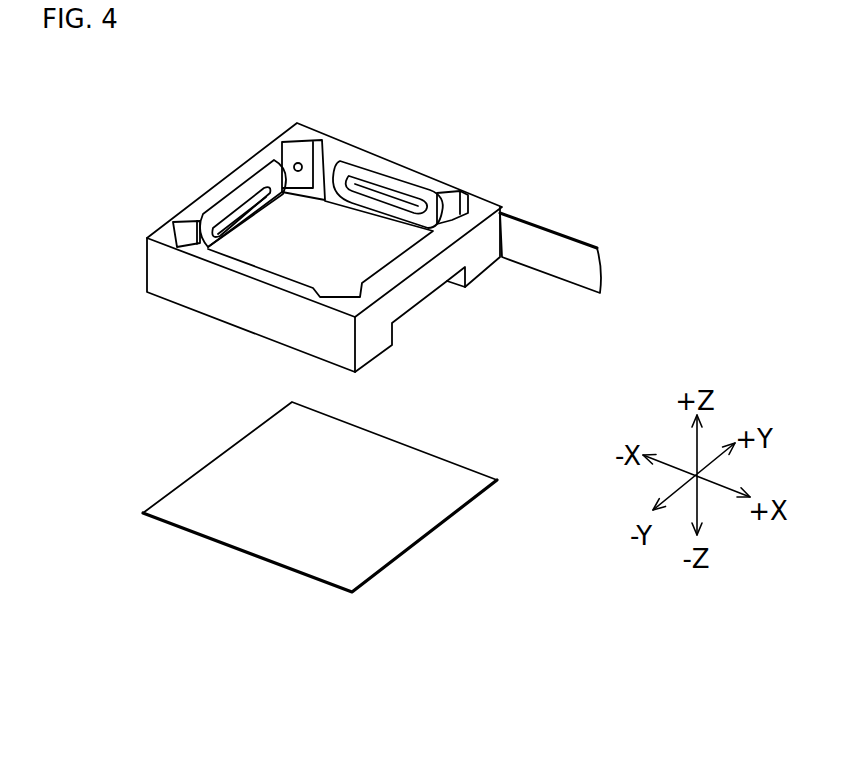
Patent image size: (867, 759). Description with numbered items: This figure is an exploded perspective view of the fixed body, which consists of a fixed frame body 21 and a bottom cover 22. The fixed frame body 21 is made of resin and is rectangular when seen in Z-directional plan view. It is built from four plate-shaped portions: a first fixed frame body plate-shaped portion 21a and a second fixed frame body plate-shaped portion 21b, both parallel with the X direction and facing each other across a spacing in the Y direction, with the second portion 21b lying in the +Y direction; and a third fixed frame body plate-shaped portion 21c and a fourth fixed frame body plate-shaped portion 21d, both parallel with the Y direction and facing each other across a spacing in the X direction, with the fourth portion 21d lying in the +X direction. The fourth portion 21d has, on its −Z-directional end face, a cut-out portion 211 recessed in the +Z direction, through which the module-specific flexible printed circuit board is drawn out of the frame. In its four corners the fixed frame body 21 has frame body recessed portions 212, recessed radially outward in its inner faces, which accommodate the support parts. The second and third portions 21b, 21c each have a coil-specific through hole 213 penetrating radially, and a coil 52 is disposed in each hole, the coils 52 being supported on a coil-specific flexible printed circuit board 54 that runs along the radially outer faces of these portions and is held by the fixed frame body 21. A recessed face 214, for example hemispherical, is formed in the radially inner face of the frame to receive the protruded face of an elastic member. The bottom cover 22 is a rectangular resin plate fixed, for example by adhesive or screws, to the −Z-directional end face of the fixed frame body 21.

The fixed frame body 21 is at (324, 220).
The first fixed frame body plate-shaped portion 21a is at (240, 302).
The second fixed frame body plate-shaped portion 21b is at (408, 167).
The third fixed frame body plate-shaped portion 21c is at (230, 182).
The fourth fixed frame body plate-shaped portion 21d is at (373, 340).
The cut-out portion 211 is at (448, 283).
The frame body recessed portion 212 is at (183, 235).
The coil-specific through hole 213 is at (332, 162).
The recessed face 214 is at (301, 162).
The coil 52 is at (353, 198).
The coil-specific flexible printed circuit board 54 is at (587, 245).
The bottom cover 22 is at (422, 453).